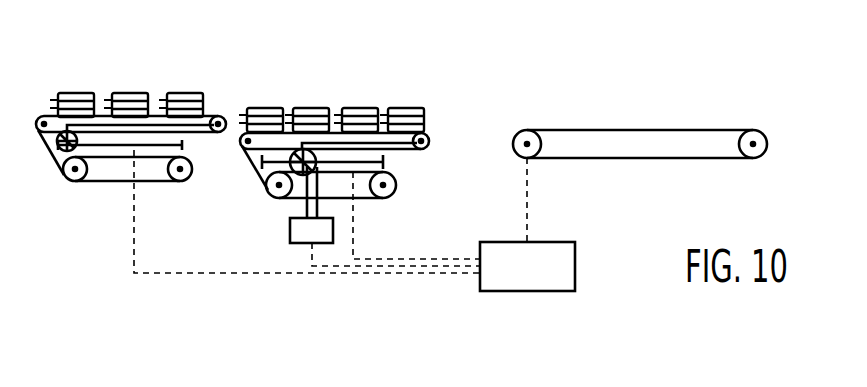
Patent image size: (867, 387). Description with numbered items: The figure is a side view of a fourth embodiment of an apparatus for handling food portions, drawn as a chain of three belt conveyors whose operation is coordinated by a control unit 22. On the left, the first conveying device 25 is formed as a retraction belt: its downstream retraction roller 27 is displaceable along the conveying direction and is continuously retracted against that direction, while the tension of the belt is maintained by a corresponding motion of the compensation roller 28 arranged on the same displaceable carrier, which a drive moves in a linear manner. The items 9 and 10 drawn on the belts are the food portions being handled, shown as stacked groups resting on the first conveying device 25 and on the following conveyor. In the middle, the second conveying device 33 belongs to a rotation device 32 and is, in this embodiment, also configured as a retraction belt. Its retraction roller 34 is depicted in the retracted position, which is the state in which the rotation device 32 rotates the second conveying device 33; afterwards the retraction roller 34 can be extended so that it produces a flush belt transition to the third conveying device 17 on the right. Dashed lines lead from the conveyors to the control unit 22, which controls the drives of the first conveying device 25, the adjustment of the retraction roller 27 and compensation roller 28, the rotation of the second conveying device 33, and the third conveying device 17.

The first conveying device 25 is at (100, 58).
The stack of sheets 9 is at (71, 93).
The retraction roller 27 is at (216, 117).
The compensation roller 28 is at (89, 164).
The rotation device 32 is at (336, 76).
The stack of different sheets 10 is at (309, 108).
The retraction roller 34 is at (426, 135).
The second conveying device 33 is at (482, 88).
The third conveying device 17 is at (664, 96).
The control unit 22 is at (513, 281).